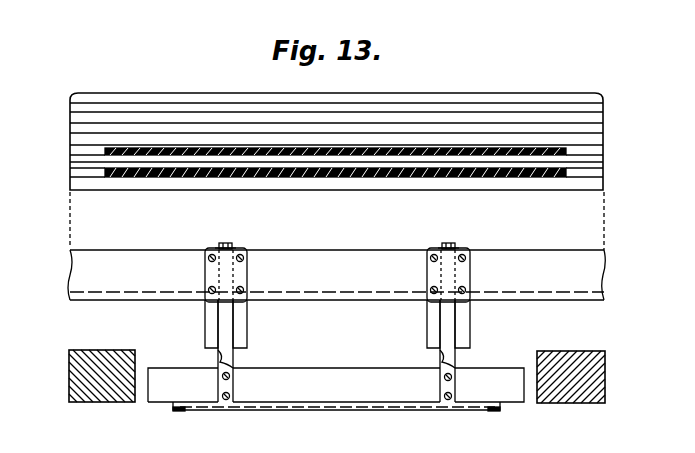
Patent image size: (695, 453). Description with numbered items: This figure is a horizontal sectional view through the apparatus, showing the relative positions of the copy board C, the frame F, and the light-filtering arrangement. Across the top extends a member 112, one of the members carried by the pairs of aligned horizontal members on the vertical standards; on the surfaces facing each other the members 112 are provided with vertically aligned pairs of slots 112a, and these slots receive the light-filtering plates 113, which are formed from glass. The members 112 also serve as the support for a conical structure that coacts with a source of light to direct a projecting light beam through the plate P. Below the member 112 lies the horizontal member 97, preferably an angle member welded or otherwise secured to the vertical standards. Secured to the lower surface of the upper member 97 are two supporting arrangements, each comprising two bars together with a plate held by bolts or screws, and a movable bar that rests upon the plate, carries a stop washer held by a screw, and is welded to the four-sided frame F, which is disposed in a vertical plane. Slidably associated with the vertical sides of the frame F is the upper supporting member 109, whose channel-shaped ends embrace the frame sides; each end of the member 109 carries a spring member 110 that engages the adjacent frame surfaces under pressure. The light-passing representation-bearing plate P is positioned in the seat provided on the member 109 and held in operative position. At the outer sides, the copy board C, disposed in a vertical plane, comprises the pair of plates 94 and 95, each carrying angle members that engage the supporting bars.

The member 112 is at (595, 118).
The slots 112a is at (593, 153).
The light-filtering plates 113 is at (351, 178).
The horizontal member 97 is at (338, 285).
The upper supporting member 109 is at (343, 405).
The spring member 110 is at (488, 424).
The plate 94 is at (100, 403).
The plate 95 is at (568, 403).
The copy board C is at (69, 372).
The frame F is at (330, 382).
The light-passing representation-bearing plate P is at (264, 405).